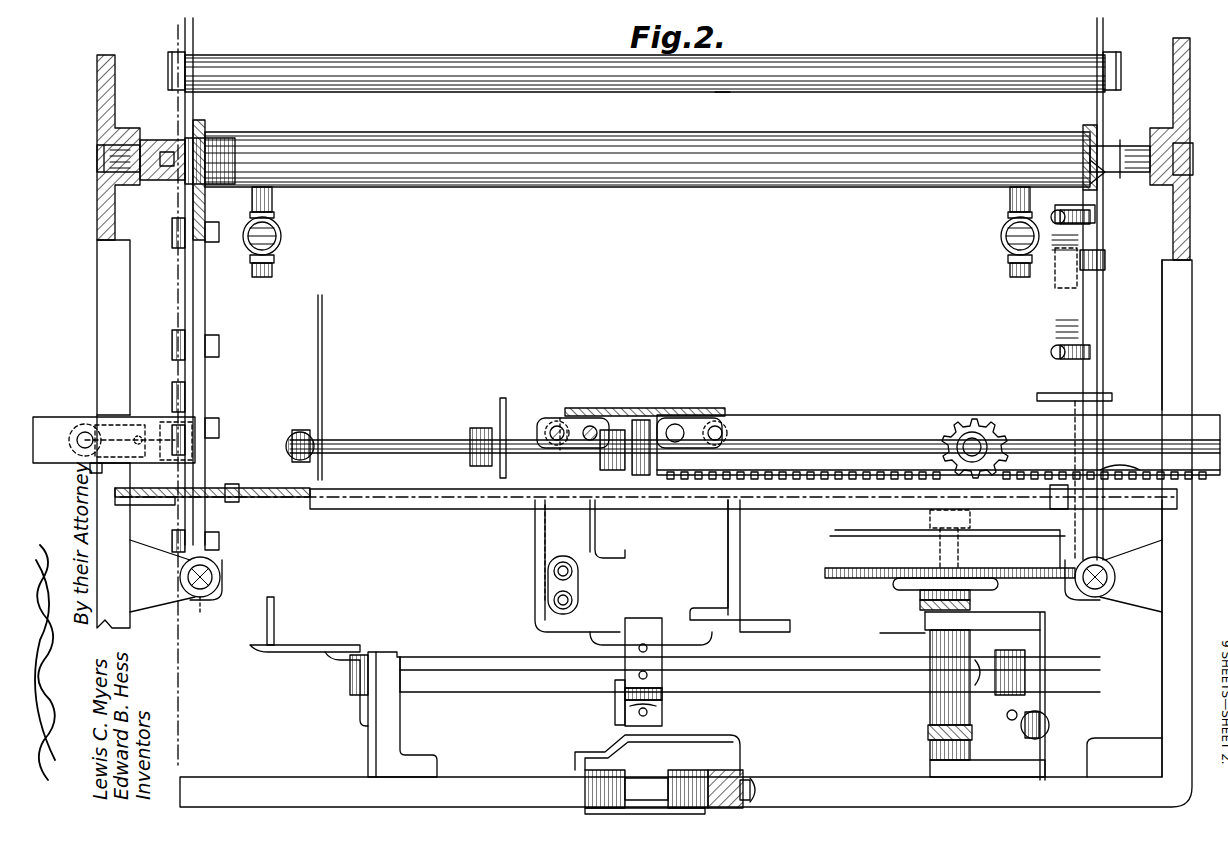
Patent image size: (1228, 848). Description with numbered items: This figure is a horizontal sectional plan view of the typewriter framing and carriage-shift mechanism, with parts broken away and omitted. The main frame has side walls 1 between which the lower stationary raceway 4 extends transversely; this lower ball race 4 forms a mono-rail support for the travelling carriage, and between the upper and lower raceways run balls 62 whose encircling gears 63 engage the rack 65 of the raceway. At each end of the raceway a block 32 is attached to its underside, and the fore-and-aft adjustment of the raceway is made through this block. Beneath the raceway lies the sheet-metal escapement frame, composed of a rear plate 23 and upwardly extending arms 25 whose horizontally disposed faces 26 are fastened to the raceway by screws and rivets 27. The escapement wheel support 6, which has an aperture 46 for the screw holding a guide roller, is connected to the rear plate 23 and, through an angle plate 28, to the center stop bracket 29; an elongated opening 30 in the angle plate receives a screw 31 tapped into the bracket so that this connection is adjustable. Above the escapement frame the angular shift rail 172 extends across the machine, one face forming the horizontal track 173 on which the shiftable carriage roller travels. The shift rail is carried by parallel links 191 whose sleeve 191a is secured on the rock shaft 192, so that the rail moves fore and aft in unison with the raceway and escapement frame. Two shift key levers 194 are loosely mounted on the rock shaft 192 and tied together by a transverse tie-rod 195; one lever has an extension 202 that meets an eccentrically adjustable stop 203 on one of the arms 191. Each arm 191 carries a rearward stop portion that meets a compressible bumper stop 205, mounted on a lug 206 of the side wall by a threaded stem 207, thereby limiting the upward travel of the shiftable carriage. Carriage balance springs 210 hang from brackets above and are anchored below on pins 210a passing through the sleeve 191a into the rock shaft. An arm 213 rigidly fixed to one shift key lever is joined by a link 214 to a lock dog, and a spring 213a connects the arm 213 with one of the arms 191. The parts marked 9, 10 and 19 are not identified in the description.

The side walls 1 is at (102, 350).
The lower stationary raceway 4 is at (806, 422).
The escapement wheel support 6 is at (628, 655).
The section line 9 is at (195, 215).
The frame rail 10 is at (474, 512).
The bar 19 is at (832, 694).
The rear plate 23 is at (585, 628).
The upwardly extending arms 25 is at (535, 425).
The horizontally disposed faces 26 is at (556, 426).
The screws and rivets 27 is at (590, 424).
The angle plate 28 is at (742, 752).
The center stop bracket 29 is at (714, 772).
The elongated opening 30 is at (745, 778).
The screw 31 is at (752, 788).
The block 32 is at (52, 428).
The aperture 46 is at (632, 717).
The balls 62 is at (970, 432).
The encircling gears 63 is at (988, 432).
The rack 65 is at (822, 482).
The shift rail 172 is at (292, 500).
The horizontal track 173 is at (430, 503).
The parallel links 191 is at (207, 400).
The sleeve 191a is at (638, 125).
The rock shaft 192 is at (215, 150).
The shift key levers 194 is at (195, 50).
The transverse tie-rod 195 is at (740, 95).
The extension 202 is at (1097, 250).
The eccentrically adjustable stop 203 is at (1100, 270).
The compressible bumper stop 205 is at (222, 577).
The lugs 206 is at (646, 576).
The threaded stem 207 is at (198, 590).
The carriage balance springs 210 is at (282, 240).
The pins 210a is at (276, 266).
The arm 213 is at (1100, 186).
The spring 213a is at (1056, 332).
The link 214 is at (1108, 162).